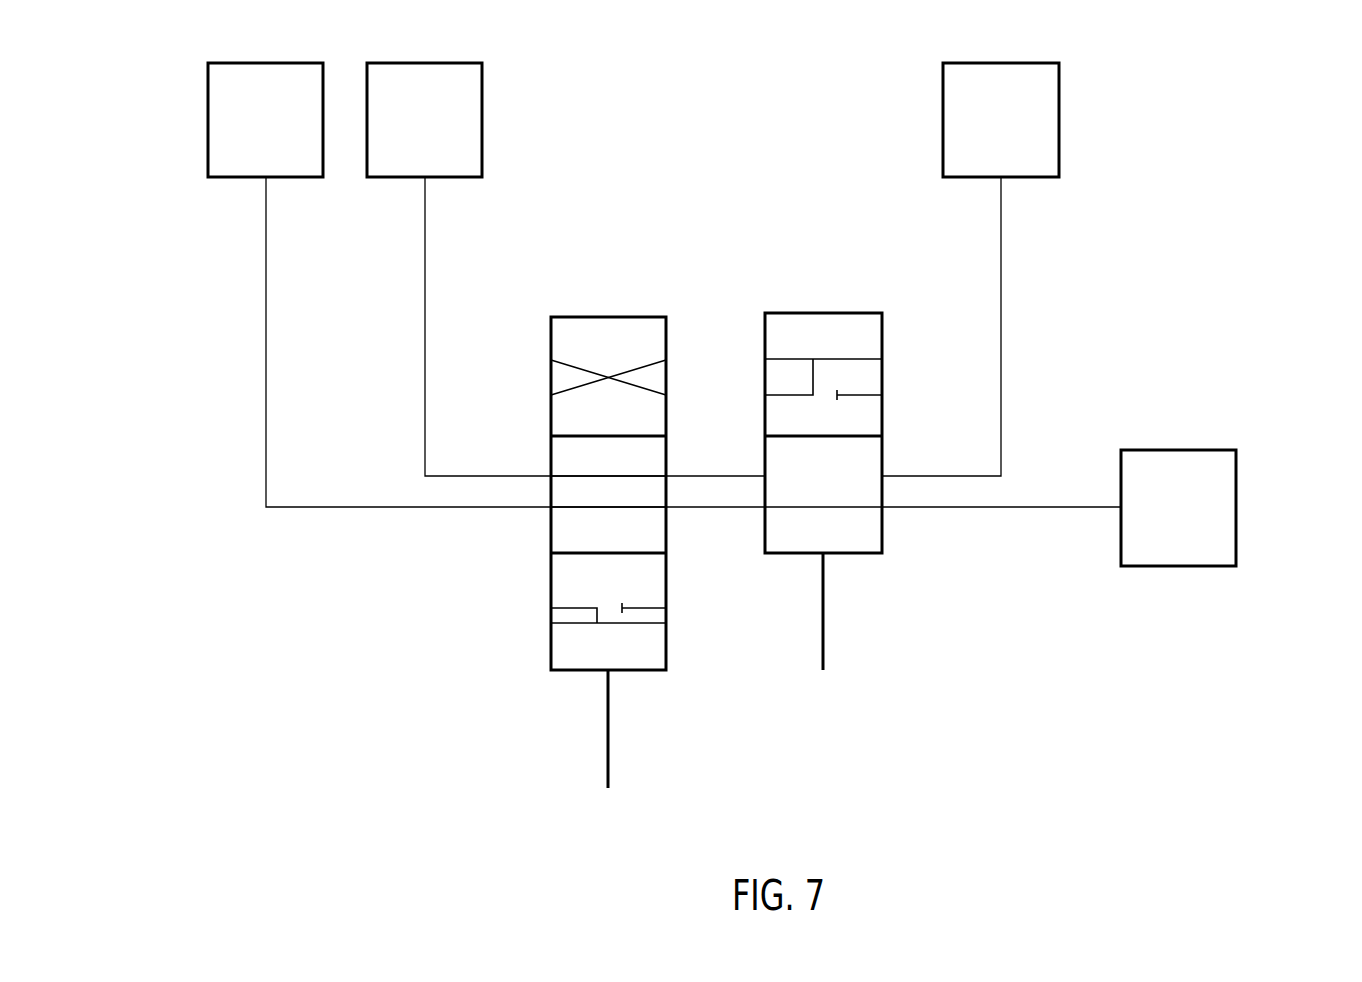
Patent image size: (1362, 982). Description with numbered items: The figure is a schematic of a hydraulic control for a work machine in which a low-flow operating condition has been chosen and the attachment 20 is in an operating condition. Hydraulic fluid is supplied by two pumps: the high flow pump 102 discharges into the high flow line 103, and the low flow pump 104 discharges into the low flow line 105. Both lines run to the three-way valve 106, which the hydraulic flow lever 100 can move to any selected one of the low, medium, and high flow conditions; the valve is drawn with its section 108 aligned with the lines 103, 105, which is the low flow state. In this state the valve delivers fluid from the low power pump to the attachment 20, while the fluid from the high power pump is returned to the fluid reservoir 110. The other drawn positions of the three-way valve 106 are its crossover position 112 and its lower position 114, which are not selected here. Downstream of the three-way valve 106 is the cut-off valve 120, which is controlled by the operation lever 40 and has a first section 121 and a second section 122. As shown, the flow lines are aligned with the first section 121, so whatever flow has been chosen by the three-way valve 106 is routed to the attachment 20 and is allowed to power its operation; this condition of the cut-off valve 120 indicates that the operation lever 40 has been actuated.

The attachment 20 is at (1224, 516).
The operation lever 40 is at (871, 622).
The hydraulic flow lever 100 is at (560, 741).
The high flow pump 102 is at (472, 112).
The high flow line 103 is at (595, 326).
The low flow pump 104 is at (221, 112).
The low flow line 105 is at (641, 342).
The three-way valve 106 is at (578, 441).
The section 108 is at (559, 493).
The fluid reservoir 110 is at (1020, 262).
The crossover valve position 112 is at (561, 348).
The valve position 114 is at (556, 644).
The cut-off valve 120 is at (852, 493).
The first section 121 is at (784, 499).
The second section 122 is at (875, 350).